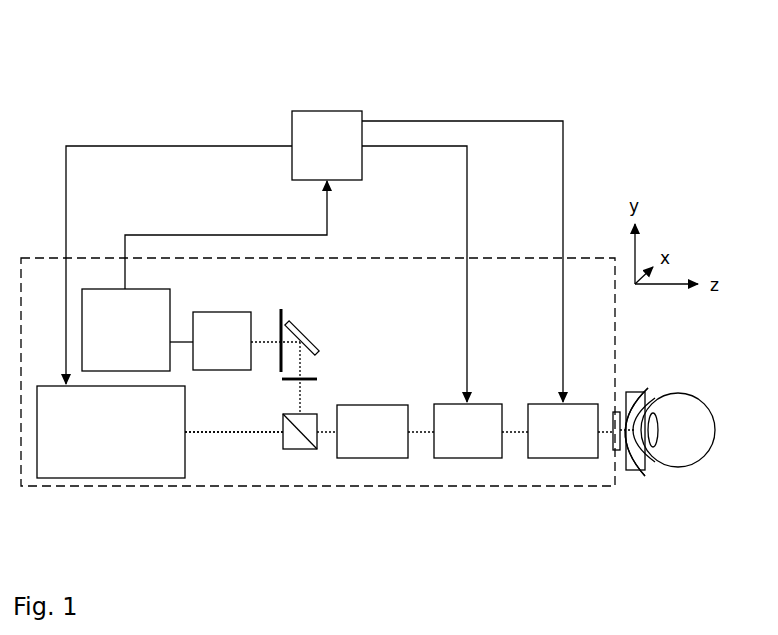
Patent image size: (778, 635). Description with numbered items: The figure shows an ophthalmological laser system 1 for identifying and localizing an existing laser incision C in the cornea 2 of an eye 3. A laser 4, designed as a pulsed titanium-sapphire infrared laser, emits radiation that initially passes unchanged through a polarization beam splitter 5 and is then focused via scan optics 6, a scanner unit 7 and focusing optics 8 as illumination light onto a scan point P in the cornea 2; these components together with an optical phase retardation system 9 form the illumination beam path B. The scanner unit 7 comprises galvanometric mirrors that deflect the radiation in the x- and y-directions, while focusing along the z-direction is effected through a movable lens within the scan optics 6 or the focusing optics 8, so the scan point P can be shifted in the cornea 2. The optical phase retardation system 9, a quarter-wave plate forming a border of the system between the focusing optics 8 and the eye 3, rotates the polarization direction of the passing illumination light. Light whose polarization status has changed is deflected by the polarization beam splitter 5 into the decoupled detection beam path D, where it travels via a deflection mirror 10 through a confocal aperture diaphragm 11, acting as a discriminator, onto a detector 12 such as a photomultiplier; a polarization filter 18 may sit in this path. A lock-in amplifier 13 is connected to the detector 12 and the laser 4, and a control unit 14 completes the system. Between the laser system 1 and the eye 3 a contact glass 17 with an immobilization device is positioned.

The ophthalmological laser system 1 is at (166, 92).
The cornea 2 is at (652, 398).
The eye 3 is at (697, 455).
The laser 4 is at (125, 457).
The polarization beam splitter 5 is at (297, 450).
The scan optics 6 is at (355, 440).
The scanner unit 7 is at (450, 440).
The focusing optics 8 is at (546, 440).
The optical phase retardation system 9 is at (613, 440).
The deflection mirror 10 is at (316, 345).
The confocal aperture diaphragm 11 is at (280, 358).
The detector 12 is at (228, 312).
The amplifier 13 is at (103, 298).
The control unit 14 is at (310, 123).
The contact glass 17 is at (645, 392).
The polarization filter 18 is at (322, 378).
The illumination beam path B is at (199, 433).
The laser incision C is at (637, 474).
The detection beam path D is at (300, 384).
The scan point P is at (645, 465).